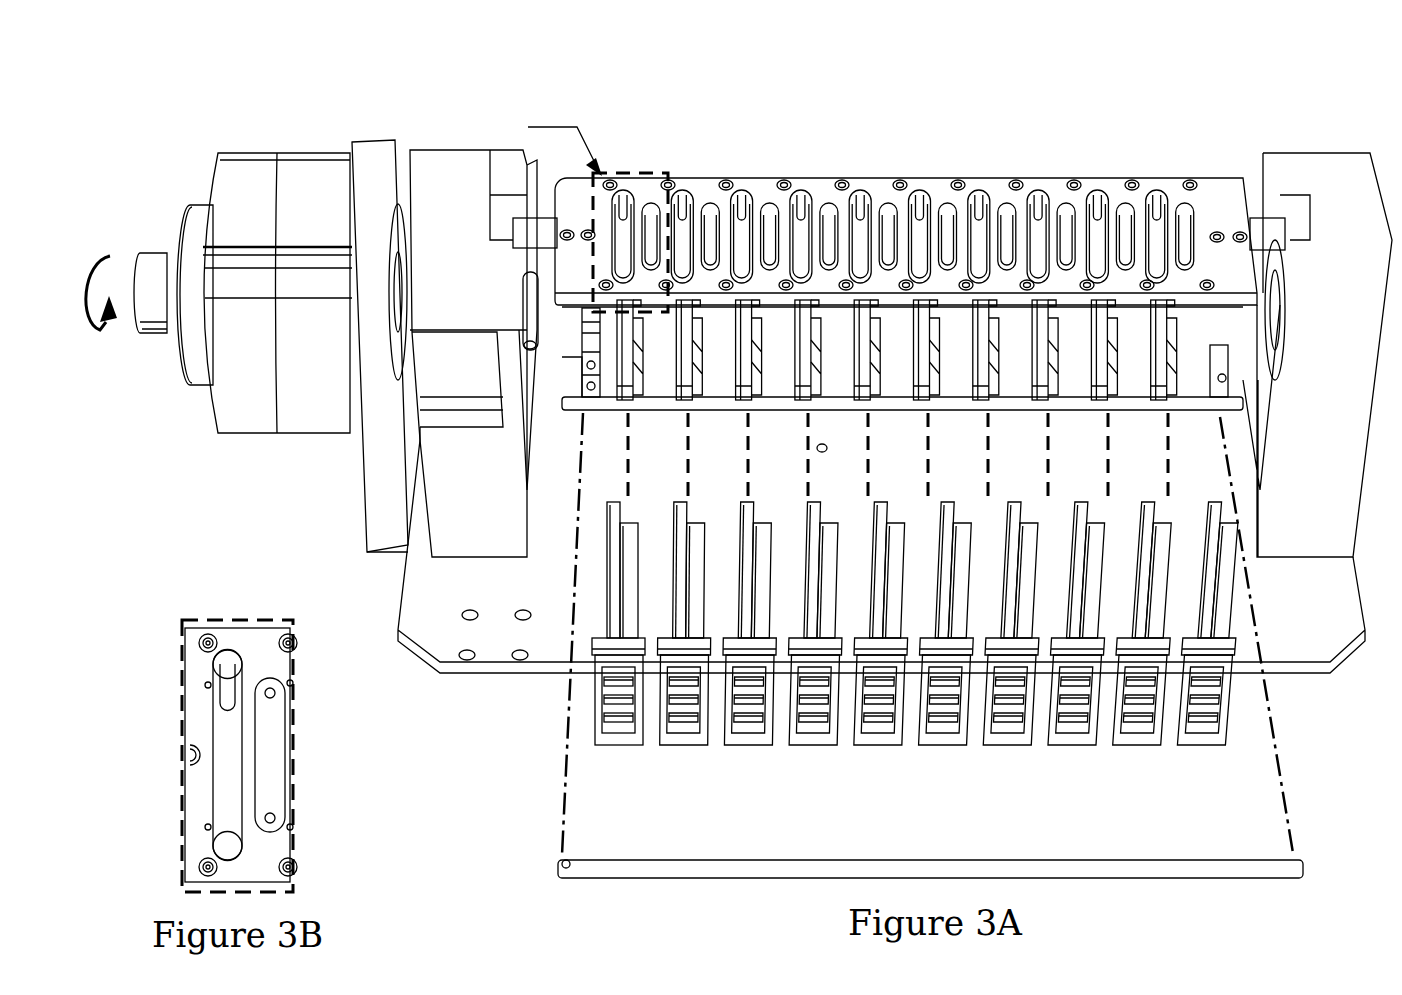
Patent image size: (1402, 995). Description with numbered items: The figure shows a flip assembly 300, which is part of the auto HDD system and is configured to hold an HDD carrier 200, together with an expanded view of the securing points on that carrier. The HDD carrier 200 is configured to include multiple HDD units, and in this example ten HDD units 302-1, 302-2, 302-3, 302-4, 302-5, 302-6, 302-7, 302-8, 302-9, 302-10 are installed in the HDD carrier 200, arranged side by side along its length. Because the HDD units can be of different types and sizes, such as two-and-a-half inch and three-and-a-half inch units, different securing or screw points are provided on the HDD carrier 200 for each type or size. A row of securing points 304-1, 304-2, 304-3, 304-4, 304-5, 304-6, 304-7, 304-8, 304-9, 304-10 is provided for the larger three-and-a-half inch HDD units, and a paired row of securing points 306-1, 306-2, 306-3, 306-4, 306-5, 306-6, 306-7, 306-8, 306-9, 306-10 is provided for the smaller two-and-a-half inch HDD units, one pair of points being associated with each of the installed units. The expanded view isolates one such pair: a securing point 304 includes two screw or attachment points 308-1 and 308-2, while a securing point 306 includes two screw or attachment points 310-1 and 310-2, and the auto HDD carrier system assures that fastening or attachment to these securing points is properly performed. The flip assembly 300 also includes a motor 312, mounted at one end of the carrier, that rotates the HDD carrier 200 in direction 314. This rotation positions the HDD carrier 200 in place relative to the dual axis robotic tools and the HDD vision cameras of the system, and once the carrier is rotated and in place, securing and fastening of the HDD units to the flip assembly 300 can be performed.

In FIG. 3A, the flip assembly 300 is at (362, 95).
In FIG. 3A, the HDD carrier 200 is at (1272, 275).
In FIG. 3A, the motor 312 is at (266, 440).
In FIG. 3A, the direction 314 is at (103, 255).
In FIG. 3A, the HDD unit 302-1 is at (619, 746).
In FIG. 3A, the HDD unit 302-2 is at (684, 746).
In FIG. 3A, the HDD unit 302-3 is at (748, 746).
In FIG. 3A, the HDD unit 302-4 is at (813, 746).
In FIG. 3A, the HDD unit 302-5 is at (878, 746).
In FIG. 3A, the HDD unit 302-6 is at (943, 746).
In FIG. 3A, the HDD unit 302-7 is at (1007, 746).
In FIG. 3A, the HDD unit 302-8 is at (1072, 746).
In FIG. 3A, the HDD unit 302-9 is at (1137, 746).
In FIG. 3A, the HDD unit 302-10 is at (1201, 746).
In FIG. 3A, the securing point 304-1 is at (620, 253).
In FIG. 3A, the securing point 304-2 is at (682, 215).
In FIG. 3A, the securing point 304-3 is at (742, 215).
In FIG. 3A, the securing point 304-4 is at (801, 215).
In FIG. 3A, the securing point 304-5 is at (860, 215).
In FIG. 3A, the securing point 304-6 is at (920, 215).
In FIG. 3A, the securing point 304-7 is at (979, 215).
In FIG. 3A, the securing point 304-8 is at (1038, 215).
In FIG. 3A, the securing point 304-9 is at (1097, 215).
In FIG. 3A, the securing point 304-10 is at (1158, 222).
In FIG. 3A, the securing point 306-1 is at (650, 222).
In FIG. 3A, the securing point 306-2 is at (710, 218).
In FIG. 3A, the securing point 306-3 is at (770, 218).
In FIG. 3A, the securing point 306-4 is at (829, 218).
In FIG. 3A, the securing point 306-5 is at (888, 218).
In FIG. 3A, the securing point 306-6 is at (948, 218).
In FIG. 3A, the securing point 306-7 is at (1007, 218).
In FIG. 3A, the securing point 306-8 is at (1066, 218).
In FIG. 3A, the securing point 306-9 is at (1125, 218).
In FIG. 3A, the securing point 306-10 is at (1187, 225).
In FIG. 3B, the securing point 304 is at (224, 730).
In FIG. 3B, the securing point 306 is at (276, 755).
In FIG. 3B, the screw or attachment point 308-1 is at (216, 668).
In FIG. 3B, the screw or attachment point 308-2 is at (222, 845).
In FIG. 3B, the screw or attachment point 310-1 is at (276, 693).
In FIG. 3B, the screw or attachment point 310-2 is at (276, 818).